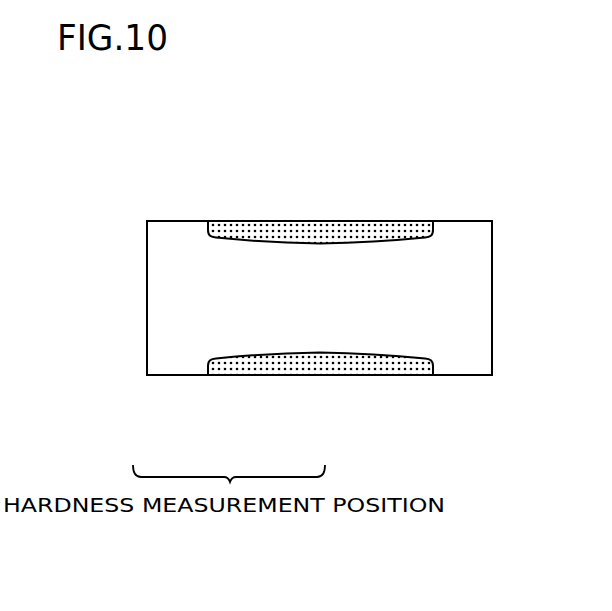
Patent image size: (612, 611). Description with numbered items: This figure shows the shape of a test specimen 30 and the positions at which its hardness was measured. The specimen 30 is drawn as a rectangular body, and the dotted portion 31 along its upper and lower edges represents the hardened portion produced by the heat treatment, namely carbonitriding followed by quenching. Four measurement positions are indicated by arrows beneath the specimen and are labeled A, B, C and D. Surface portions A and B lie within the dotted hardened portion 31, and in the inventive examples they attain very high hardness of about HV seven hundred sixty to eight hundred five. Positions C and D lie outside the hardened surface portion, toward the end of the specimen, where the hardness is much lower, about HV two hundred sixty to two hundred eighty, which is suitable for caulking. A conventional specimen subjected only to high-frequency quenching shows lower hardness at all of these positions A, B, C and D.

The test piece (steel member) 30 is at (484, 172).
The hardened layer 31 is at (238, 222).
The surface portion A is at (303, 398).
The surface portion B is at (249, 398).
The measurement position C is at (197, 398).
The measurement position D is at (165, 398).